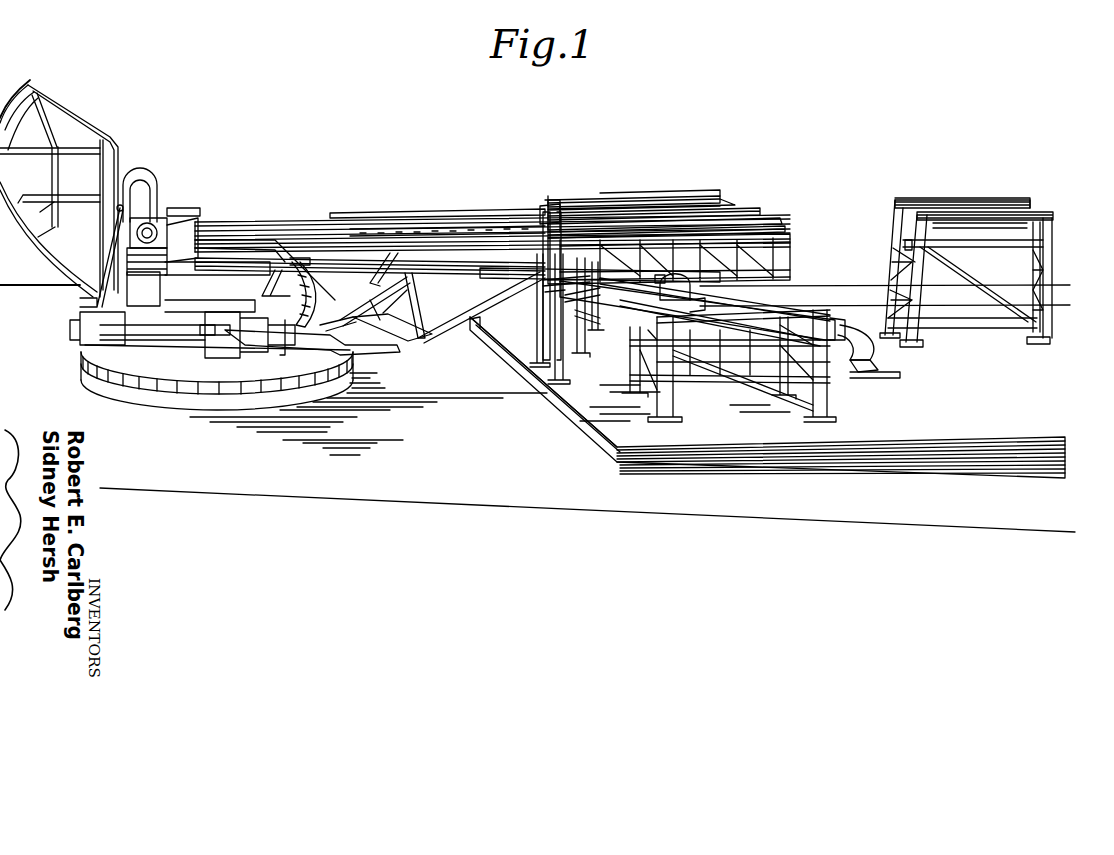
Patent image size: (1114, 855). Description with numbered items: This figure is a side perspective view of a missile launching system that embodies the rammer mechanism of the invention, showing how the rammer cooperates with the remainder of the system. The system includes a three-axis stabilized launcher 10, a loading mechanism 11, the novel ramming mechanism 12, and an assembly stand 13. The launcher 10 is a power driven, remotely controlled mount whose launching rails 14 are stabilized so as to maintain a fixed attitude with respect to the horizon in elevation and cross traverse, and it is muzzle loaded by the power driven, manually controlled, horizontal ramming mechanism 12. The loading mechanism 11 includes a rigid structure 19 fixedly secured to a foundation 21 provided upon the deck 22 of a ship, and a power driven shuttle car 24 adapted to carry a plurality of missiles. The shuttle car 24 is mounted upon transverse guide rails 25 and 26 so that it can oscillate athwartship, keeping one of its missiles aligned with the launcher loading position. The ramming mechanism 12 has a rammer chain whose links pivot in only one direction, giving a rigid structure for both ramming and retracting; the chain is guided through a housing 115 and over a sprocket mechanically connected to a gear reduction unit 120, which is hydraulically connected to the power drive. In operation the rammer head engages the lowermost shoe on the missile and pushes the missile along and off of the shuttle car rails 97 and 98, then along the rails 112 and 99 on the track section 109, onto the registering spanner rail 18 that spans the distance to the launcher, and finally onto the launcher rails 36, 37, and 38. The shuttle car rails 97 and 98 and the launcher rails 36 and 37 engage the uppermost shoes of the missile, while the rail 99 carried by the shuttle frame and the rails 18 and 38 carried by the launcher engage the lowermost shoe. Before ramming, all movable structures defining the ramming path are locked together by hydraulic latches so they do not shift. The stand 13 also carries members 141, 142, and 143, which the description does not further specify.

The three-axis stabilized launcher 10 is at (262, 207).
The loading mechanism 11 is at (607, 190).
The ramming mechanism 12 is at (864, 387).
The assembly stand 13 is at (880, 188).
The launching rails 14 is at (377, 206).
The spanner rail 18 is at (541, 282).
The rigid structure 19 is at (640, 363).
The foundation 21 is at (988, 460).
The deck 22 is at (500, 445).
The shuttle car 24 is at (797, 259).
The transverse guide rail 25 is at (806, 305).
The transverse guide rail 26 is at (640, 323).
The launcher rail 36 is at (421, 214).
The launcher rail 37 is at (478, 220).
The launcher rail 38 is at (346, 268).
The shuttle car rail 97 is at (735, 206).
The shuttle car rail 98 is at (713, 196).
The rail 99 is at (606, 272).
The track section 109 is at (541, 205).
The rail 112 is at (542, 232).
The housing 115 is at (847, 343).
The gear reduction unit 120 is at (680, 293).
The upper rail of stand 141 is at (920, 200).
The lower rail of stand 142 is at (972, 212).
The bracket 143 is at (905, 244).